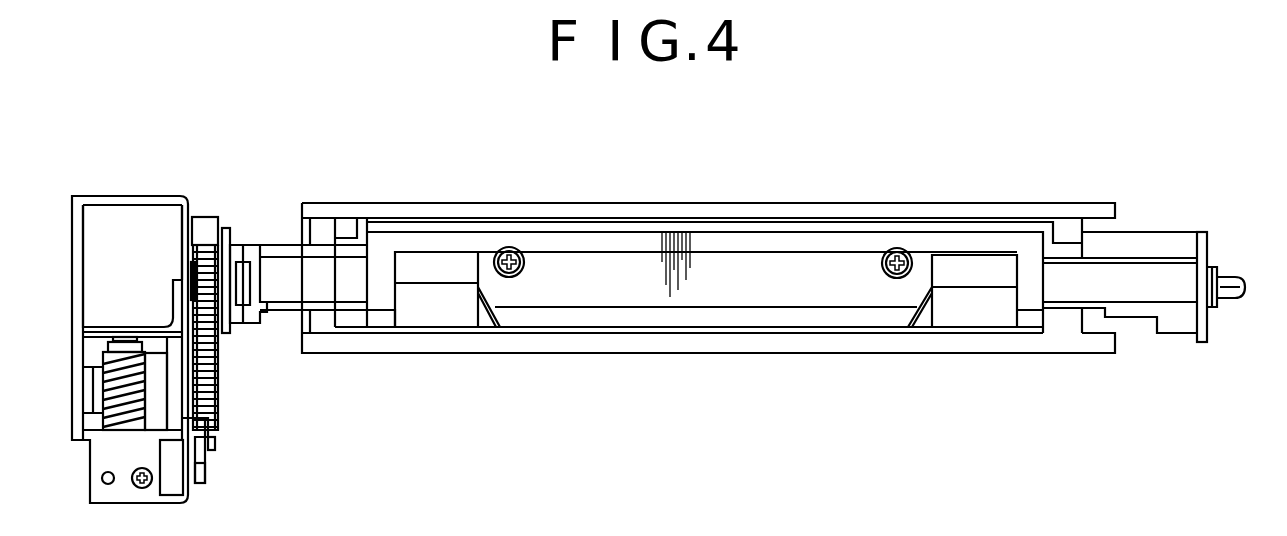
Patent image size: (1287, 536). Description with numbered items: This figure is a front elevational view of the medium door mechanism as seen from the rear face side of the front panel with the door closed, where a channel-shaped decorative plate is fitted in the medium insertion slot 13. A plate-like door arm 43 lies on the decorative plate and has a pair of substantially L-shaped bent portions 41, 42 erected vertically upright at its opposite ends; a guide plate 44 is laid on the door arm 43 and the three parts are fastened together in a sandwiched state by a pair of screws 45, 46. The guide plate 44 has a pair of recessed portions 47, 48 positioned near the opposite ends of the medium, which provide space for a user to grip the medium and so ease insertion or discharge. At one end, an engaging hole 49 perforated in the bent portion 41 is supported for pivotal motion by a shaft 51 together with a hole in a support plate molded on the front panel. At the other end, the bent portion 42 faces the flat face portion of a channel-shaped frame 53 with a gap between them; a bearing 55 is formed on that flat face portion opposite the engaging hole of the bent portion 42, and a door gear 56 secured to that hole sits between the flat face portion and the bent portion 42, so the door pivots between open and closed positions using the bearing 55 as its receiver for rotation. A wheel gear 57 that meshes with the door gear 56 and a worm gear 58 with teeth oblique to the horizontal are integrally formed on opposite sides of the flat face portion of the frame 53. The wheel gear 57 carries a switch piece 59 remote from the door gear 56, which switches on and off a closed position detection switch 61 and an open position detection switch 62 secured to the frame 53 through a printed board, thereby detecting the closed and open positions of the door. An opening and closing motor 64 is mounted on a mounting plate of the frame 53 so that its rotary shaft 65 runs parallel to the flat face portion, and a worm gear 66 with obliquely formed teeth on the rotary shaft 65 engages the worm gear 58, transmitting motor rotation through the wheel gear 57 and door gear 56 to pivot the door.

The medium insertion slot 13 is at (960, 203).
The bent portion 41 is at (1203, 342).
The bent portion 42 is at (250, 250).
The door arm 43 is at (318, 270).
The guide plate 44 is at (708, 293).
The screw 45 is at (510, 247).
The screw 46 is at (897, 248).
The recessed portion 47 is at (443, 313).
The recessed portion 48 is at (970, 313).
The engaging hole 49 is at (1195, 282).
The shaft 51 is at (1245, 285).
The frame 53 is at (113, 196).
The bearing 55 is at (192, 272).
The door gear 56 is at (205, 245).
The wheel gear 57 is at (207, 382).
The worm gear 58 is at (110, 393).
The switch piece 59 is at (215, 442).
The closed position detection switch 61 is at (207, 480).
The open position detection switch 62 is at (205, 425).
The opening and closing motor 64 is at (92, 262).
The rotary shaft 65 is at (100, 338).
The worm gear 66 is at (107, 345).